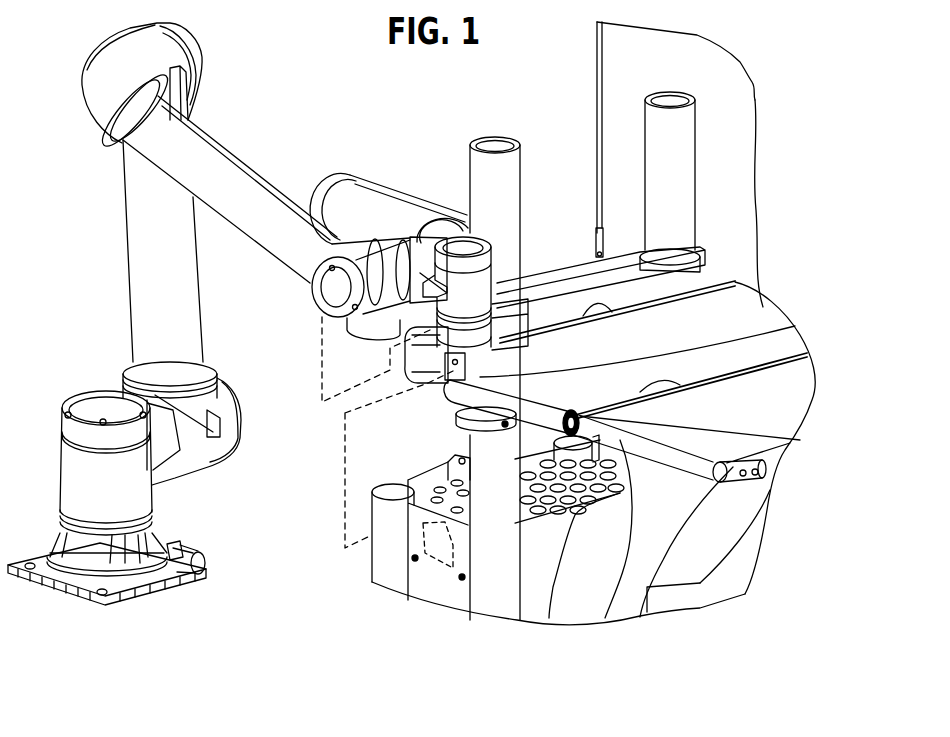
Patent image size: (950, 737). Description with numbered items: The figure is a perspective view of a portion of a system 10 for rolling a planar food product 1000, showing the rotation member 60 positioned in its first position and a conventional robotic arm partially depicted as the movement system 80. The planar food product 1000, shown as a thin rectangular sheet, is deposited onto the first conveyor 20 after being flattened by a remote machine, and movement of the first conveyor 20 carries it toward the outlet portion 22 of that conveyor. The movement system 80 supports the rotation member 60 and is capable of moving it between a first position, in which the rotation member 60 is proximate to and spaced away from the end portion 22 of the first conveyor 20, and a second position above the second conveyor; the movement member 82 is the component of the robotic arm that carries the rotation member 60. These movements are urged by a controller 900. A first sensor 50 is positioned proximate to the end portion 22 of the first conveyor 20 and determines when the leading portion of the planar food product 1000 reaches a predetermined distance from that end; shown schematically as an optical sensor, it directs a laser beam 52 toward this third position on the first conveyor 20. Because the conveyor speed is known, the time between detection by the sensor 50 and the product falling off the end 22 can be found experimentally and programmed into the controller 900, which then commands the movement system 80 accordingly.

The system for rolling planar food product 10 is at (721, 99).
The first conveyor 20 is at (793, 438).
The outlet portion of the first conveyor 22 is at (458, 426).
The first sensor 50 is at (548, 306).
The laser beam 52 is at (750, 324).
The rotation member 60 is at (606, 612).
The movement system 80 is at (253, 182).
The movement member 82 is at (478, 332).
The controller 900 is at (427, 562).
The planar food product 1000 is at (467, 394).